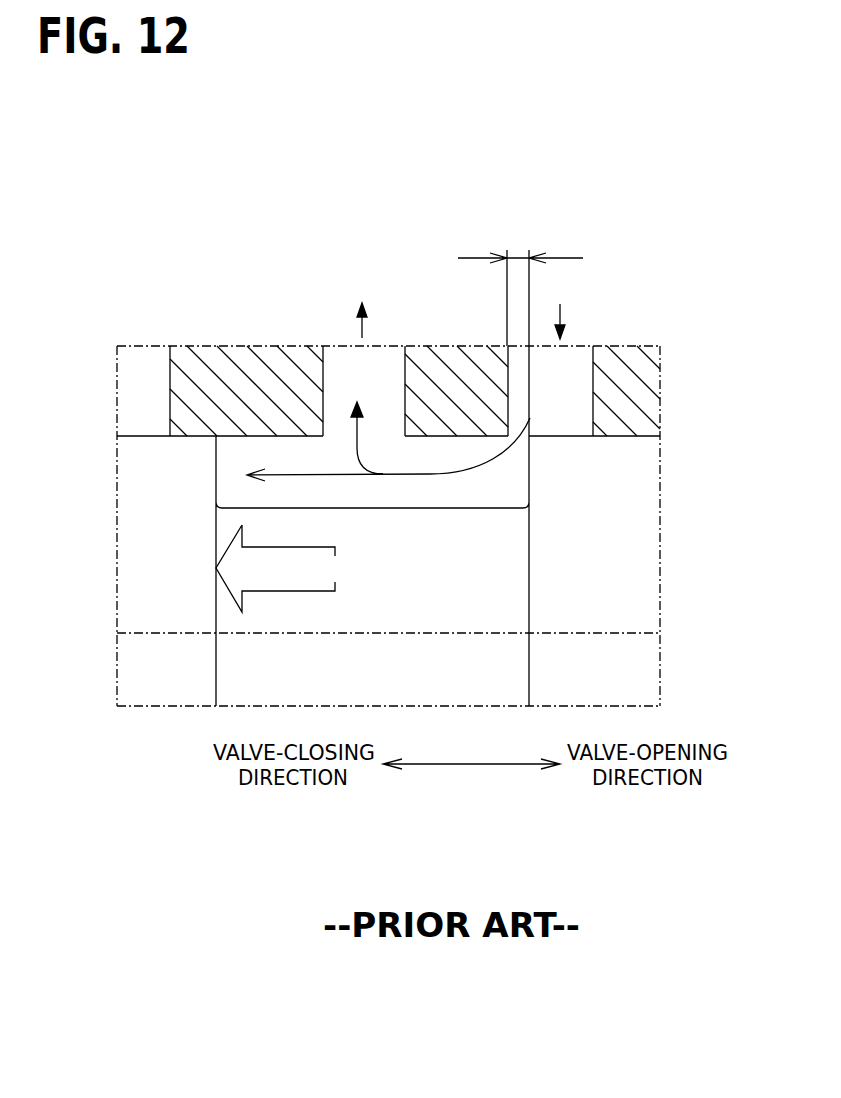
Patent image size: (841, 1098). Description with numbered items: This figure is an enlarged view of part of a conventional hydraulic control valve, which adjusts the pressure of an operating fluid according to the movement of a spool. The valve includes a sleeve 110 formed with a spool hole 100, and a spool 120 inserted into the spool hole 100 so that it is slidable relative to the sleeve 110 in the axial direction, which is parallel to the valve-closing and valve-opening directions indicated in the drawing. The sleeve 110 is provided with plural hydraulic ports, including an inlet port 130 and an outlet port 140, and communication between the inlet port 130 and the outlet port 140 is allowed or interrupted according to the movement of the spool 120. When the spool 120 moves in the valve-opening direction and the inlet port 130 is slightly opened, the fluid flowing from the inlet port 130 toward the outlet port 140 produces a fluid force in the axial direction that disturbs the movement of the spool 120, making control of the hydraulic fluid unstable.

The spool hole 100 is at (618, 437).
The sleeve 110 is at (643, 372).
The spool 120 is at (633, 595).
The inlet port 130 is at (575, 365).
The outlet port 140 is at (387, 365).